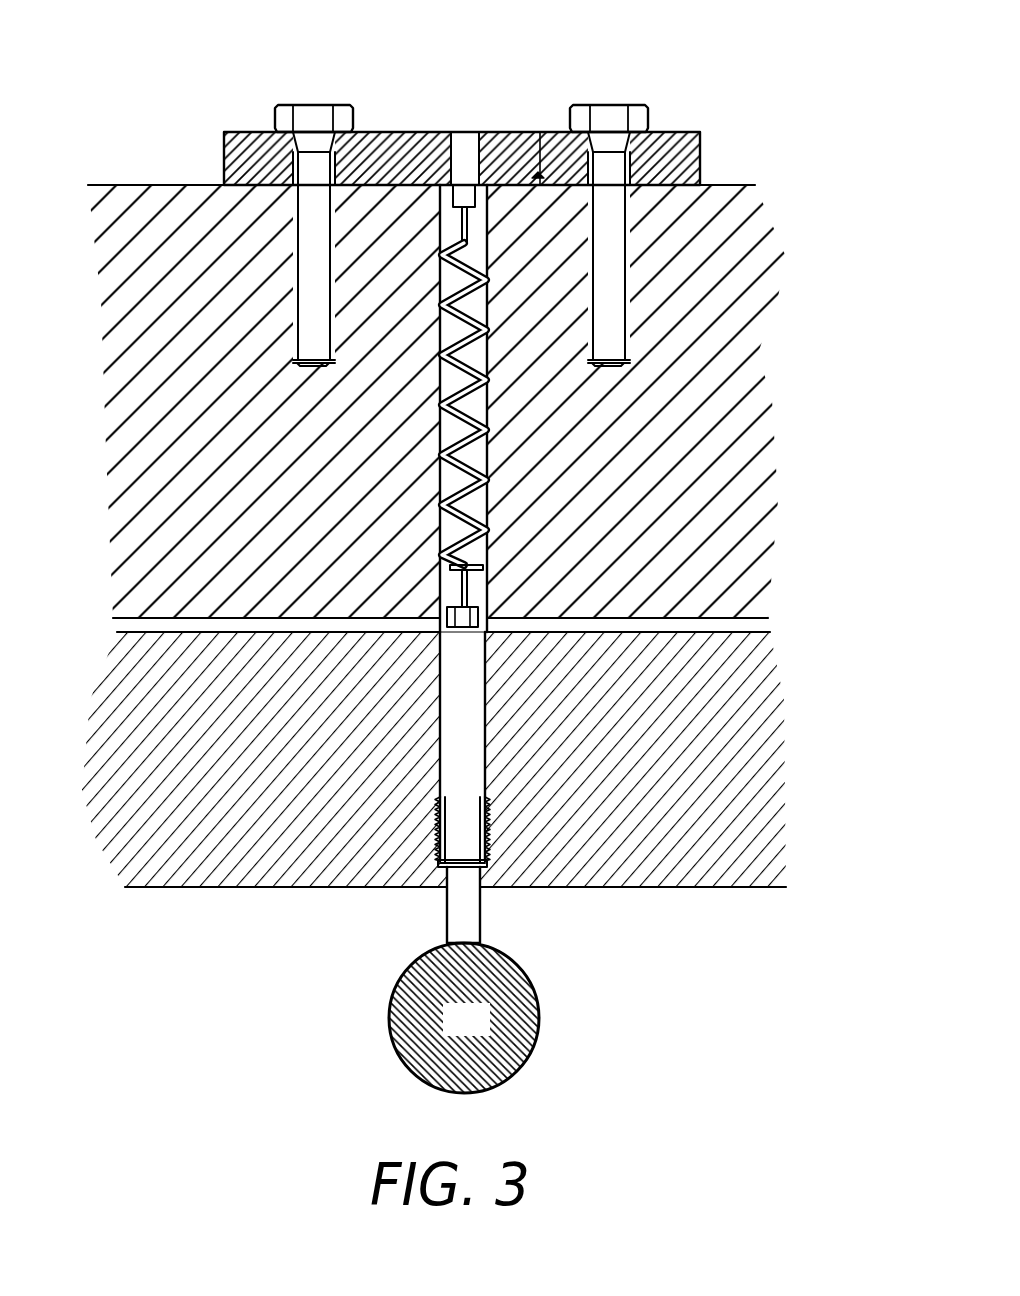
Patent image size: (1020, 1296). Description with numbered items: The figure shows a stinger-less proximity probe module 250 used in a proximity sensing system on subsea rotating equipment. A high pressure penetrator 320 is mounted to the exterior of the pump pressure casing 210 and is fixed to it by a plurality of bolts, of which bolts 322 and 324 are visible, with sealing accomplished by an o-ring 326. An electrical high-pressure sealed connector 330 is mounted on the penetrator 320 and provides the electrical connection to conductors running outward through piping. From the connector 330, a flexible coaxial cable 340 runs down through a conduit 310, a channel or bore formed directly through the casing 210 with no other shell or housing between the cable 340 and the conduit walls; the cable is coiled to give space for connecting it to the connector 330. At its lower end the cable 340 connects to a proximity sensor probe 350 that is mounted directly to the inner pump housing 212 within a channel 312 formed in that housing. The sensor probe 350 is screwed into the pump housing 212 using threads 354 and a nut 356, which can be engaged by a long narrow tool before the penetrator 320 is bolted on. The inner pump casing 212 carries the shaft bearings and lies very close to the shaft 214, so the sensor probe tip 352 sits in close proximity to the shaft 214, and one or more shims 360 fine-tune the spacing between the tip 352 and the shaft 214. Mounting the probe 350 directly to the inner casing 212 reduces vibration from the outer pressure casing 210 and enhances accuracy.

The pump pressure casing 210 is at (272, 512).
The inner pump housing 212 is at (252, 750).
The shaft 214 is at (487, 1032).
The proximity probe module 250 is at (505, 73).
The conduit 310 is at (440, 448).
The channel 312 is at (440, 718).
The high pressure penetrator 320 is at (224, 170).
The bolt 322 is at (312, 115).
The bolt 324 is at (614, 143).
The o-ring 326 is at (388, 182).
The sealed connector 330 is at (467, 140).
The coaxial cable 340 is at (487, 427).
The proximity sensor probe 350 is at (452, 753).
The tip 352 is at (446, 933).
The threads 354 is at (434, 822).
The nut 356 is at (445, 607).
The shim 360 is at (446, 868).